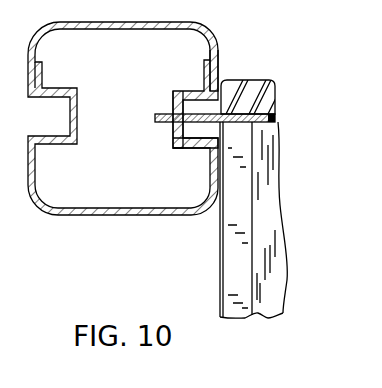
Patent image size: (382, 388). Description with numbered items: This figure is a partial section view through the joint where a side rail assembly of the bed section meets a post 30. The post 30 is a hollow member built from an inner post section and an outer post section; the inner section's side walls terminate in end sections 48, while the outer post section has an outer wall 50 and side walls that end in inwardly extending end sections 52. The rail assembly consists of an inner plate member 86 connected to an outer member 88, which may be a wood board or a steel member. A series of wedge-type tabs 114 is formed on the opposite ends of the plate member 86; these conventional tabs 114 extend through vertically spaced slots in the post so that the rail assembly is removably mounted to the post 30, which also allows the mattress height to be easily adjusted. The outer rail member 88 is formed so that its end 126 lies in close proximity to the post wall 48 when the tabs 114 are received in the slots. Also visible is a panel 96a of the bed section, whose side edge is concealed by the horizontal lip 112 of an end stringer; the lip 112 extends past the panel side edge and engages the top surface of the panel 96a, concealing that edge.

The post 30 is at (43, 217).
The end of outer rail member 126 is at (137, 69).
The end section 48 is at (219, 75).
The outer wall 50 is at (203, 147).
The inwardly extending end section 52 is at (173, 132).
The outer member 88 is at (273, 79).
The inner plate member 86 is at (278, 118).
The wedge-type tab 114 is at (158, 120).
The horizontal lip 112 is at (238, 255).
The panel 96a is at (288, 280).